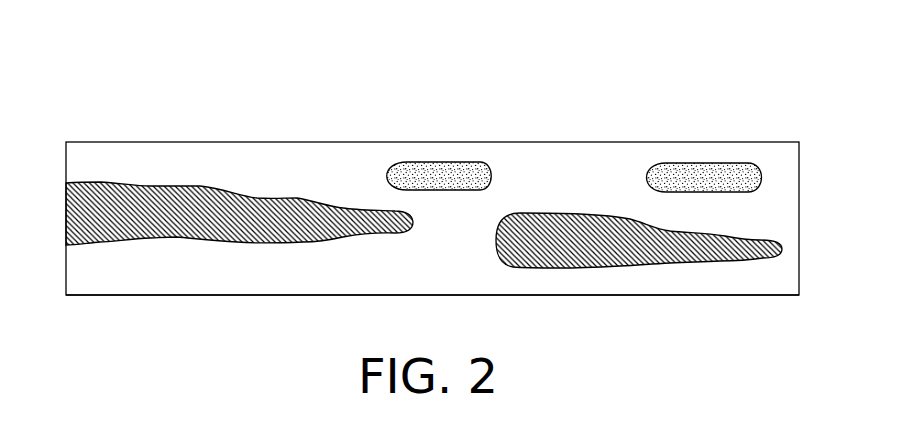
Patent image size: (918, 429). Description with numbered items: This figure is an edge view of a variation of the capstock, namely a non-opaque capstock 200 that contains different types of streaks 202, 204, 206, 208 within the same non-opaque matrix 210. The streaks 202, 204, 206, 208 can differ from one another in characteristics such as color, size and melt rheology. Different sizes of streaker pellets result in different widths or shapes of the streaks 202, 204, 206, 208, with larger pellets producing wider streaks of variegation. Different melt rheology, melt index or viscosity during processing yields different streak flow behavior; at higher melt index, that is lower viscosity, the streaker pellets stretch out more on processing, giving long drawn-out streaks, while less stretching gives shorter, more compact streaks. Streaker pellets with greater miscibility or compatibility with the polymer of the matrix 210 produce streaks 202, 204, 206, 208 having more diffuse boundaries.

The non-opaque capstock 200 is at (297, 143).
The streak 202 is at (175, 208).
The streak 204 is at (448, 162).
The streak 206 is at (553, 215).
The streak 208 is at (708, 163).
The non-opaque matrix 210 is at (94, 270).